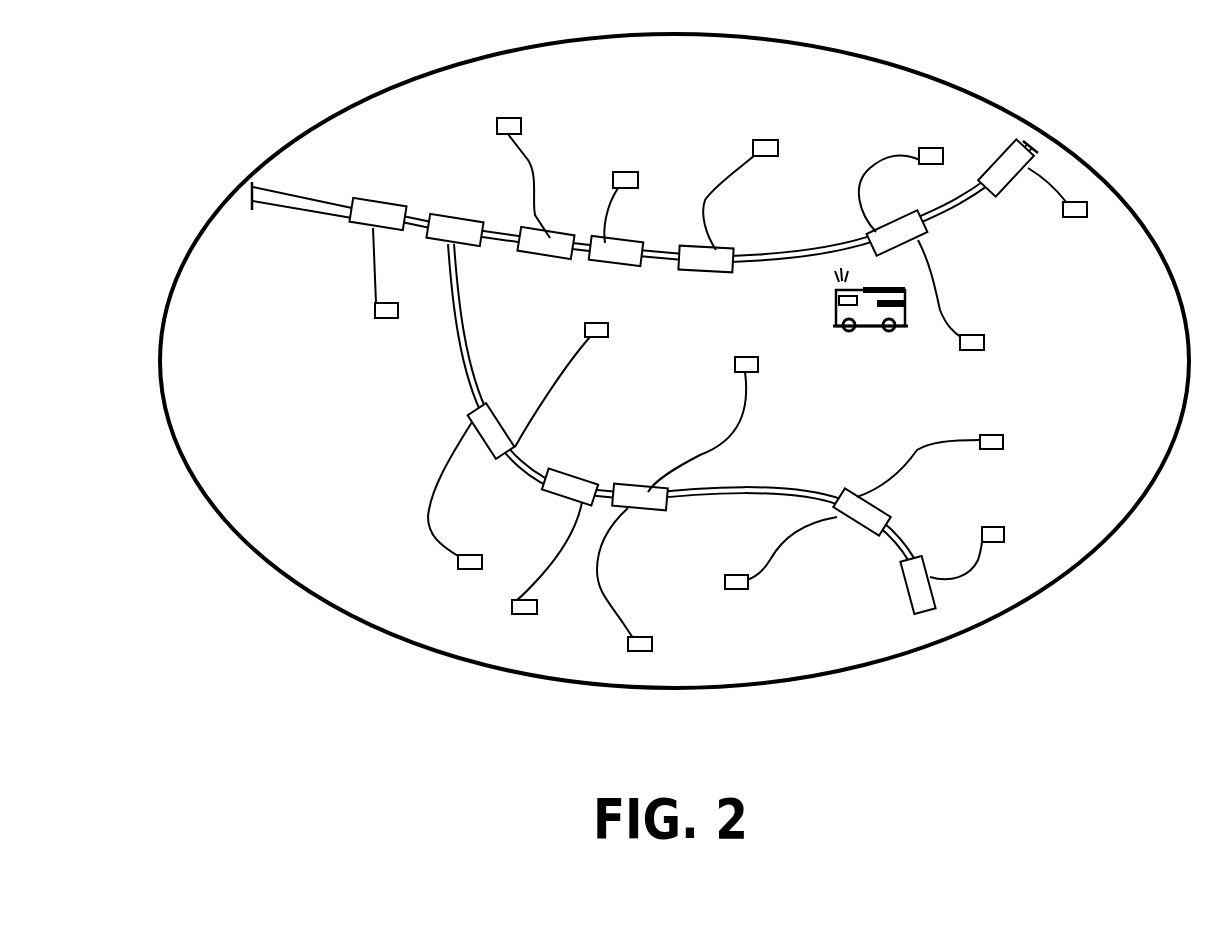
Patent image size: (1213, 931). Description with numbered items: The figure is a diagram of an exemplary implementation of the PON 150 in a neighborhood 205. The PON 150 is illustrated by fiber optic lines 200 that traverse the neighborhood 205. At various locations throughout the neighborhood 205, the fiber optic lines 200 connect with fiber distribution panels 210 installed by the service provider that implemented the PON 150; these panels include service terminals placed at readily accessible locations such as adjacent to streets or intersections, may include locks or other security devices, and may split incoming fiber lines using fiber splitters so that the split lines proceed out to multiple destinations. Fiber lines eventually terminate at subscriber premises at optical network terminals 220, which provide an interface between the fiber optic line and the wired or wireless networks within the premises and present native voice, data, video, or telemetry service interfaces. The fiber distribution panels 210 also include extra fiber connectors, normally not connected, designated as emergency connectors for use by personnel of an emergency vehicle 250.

The PON 150 is at (268, 76).
The fiber optic line 200 is at (290, 192).
The neighborhood 205 is at (918, 72).
The fiber distribution panel 210 is at (378, 202).
The optical network terminal 220 is at (521, 126).
The emergency vehicle 250 is at (854, 332).